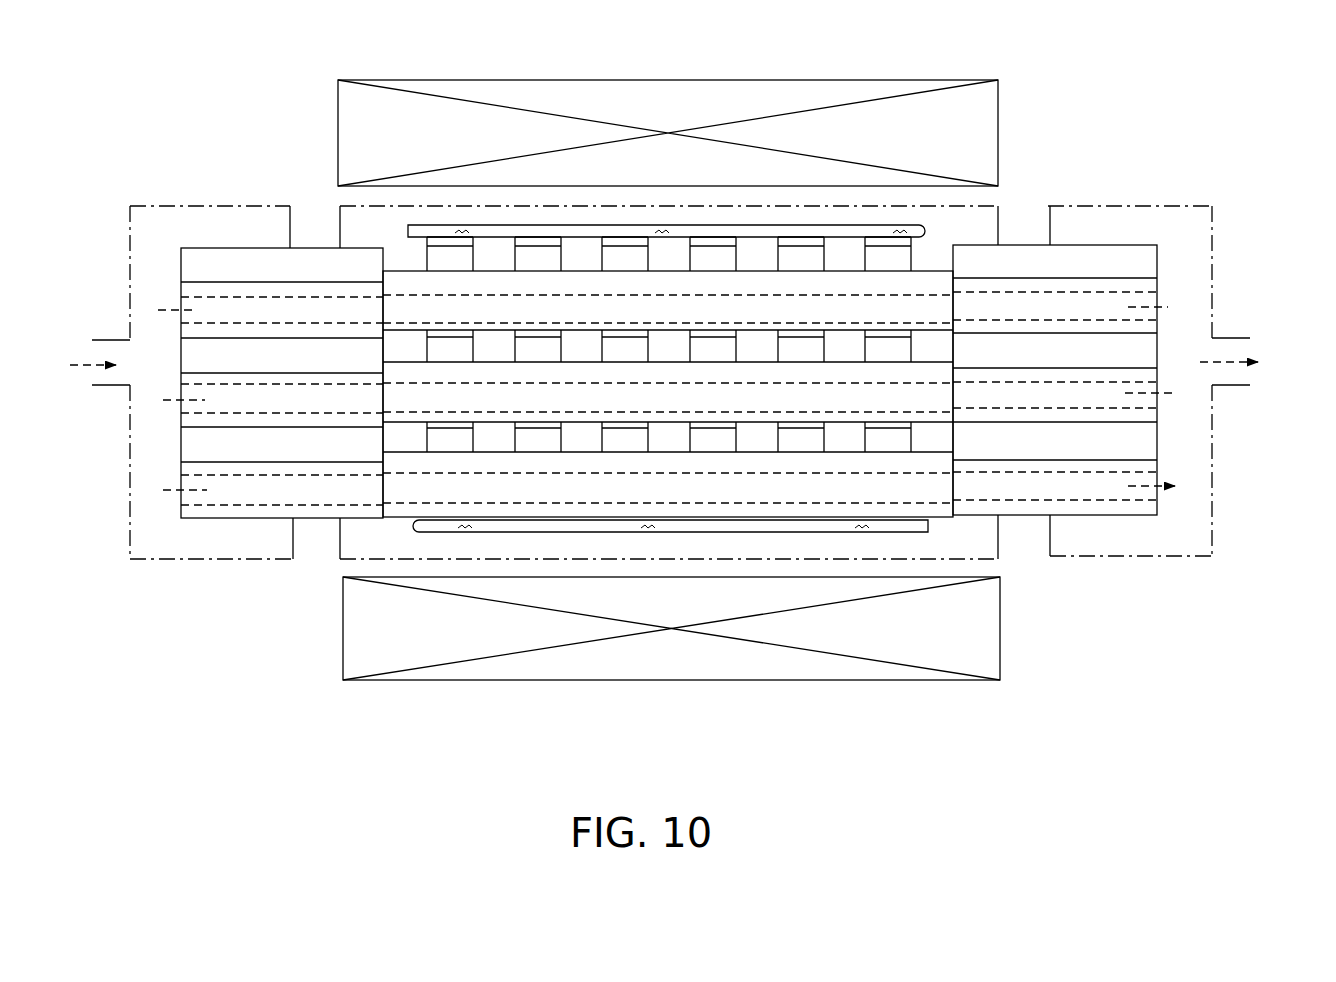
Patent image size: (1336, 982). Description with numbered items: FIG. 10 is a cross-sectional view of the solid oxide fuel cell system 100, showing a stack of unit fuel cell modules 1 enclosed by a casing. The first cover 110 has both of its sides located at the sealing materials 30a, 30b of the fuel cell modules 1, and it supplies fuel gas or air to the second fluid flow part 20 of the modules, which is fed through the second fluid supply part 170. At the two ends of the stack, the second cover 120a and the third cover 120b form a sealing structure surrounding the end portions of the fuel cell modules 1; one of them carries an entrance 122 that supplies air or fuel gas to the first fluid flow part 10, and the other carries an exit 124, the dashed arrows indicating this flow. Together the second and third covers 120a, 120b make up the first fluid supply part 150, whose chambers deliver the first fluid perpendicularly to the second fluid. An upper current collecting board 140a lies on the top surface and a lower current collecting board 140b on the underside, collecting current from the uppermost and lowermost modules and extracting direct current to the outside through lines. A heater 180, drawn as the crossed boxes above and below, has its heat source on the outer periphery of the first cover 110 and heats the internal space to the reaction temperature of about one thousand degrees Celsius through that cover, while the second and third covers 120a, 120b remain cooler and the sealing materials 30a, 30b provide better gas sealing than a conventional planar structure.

The fuel cell module 1 is at (410, 285).
The first fluid flow part 10 is at (193, 395).
The second fluid flow part 20 is at (442, 258).
The sealing material 30a is at (250, 270).
The sealing material 30b is at (1105, 355).
The solid oxide fuel cell system 100 is at (1136, 620).
The first cover 110 is at (343, 535).
The second cover 120a is at (148, 560).
The third cover 120b is at (1195, 547).
The entrance 122 is at (107, 383).
The exit 124 is at (1230, 377).
The upper current collecting board 140a is at (878, 228).
The lower current collecting board 140b is at (903, 523).
The first fluid supply part 150 is at (105, 468).
The second fluid supply part 170 is at (358, 566).
The heater 180 is at (637, 105).